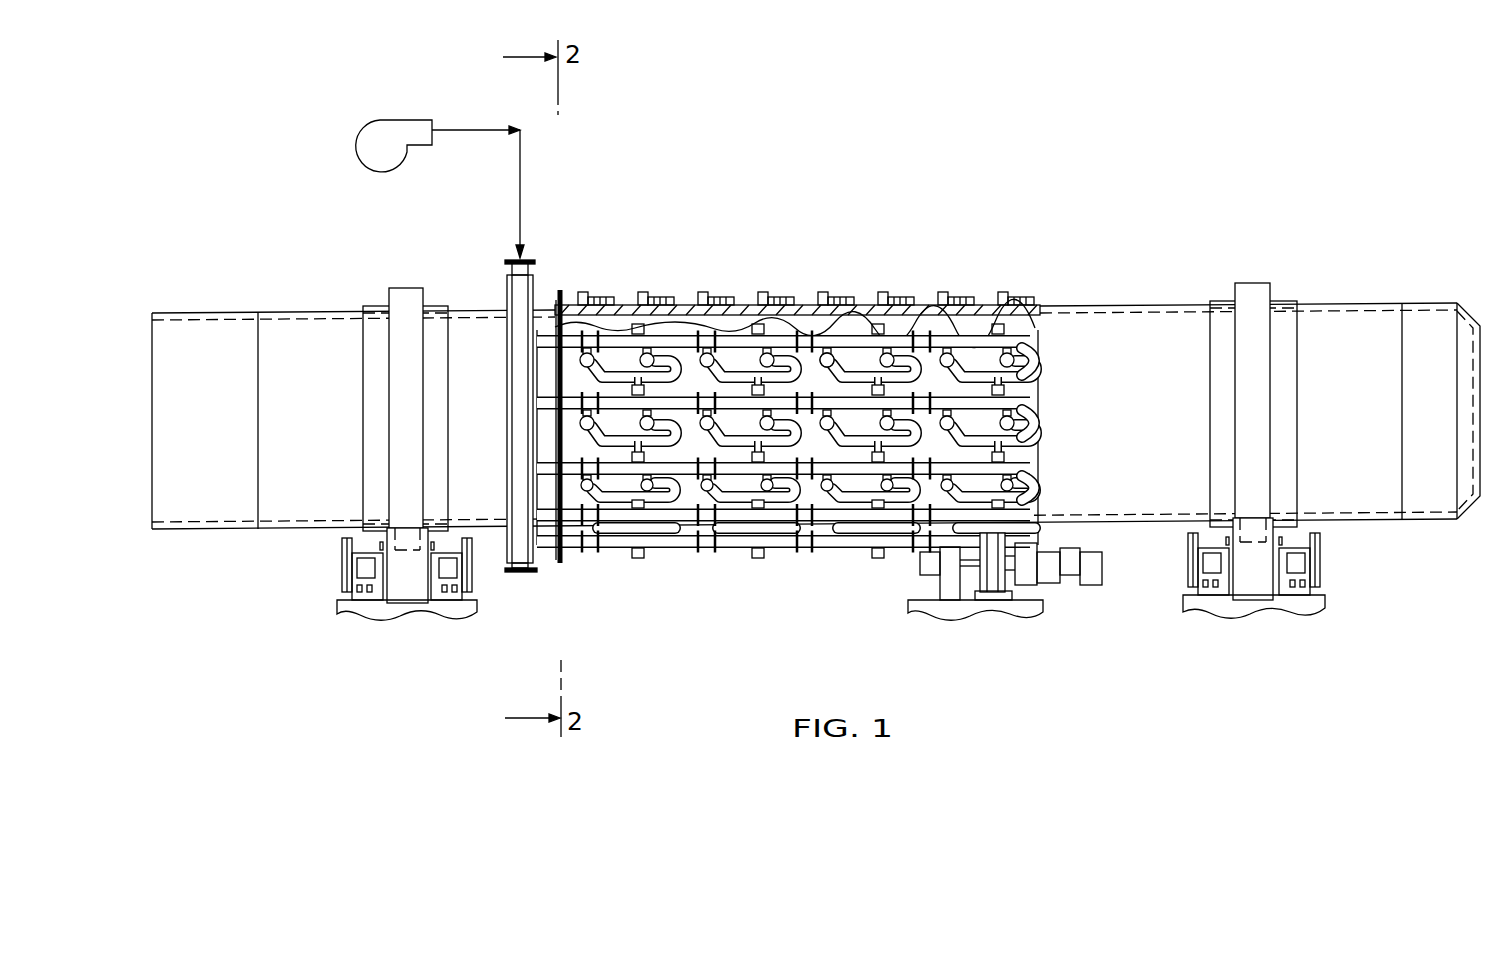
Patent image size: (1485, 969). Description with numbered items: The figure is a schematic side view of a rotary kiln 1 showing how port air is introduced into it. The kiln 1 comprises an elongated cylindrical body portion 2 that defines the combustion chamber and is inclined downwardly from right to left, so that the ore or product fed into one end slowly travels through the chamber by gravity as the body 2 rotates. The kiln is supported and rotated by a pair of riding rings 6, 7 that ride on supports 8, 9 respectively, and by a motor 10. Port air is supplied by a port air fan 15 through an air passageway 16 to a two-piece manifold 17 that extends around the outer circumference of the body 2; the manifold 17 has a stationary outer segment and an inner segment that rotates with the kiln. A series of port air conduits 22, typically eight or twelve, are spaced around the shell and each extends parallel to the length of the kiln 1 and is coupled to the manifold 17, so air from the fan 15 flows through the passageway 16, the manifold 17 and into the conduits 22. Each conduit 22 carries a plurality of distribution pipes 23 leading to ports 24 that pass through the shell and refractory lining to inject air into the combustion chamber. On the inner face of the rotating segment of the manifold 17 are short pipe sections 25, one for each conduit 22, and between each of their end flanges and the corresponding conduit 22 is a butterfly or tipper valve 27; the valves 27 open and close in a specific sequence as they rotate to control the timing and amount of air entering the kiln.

The rotary kiln 1 is at (1113, 143).
The cylindrical body portion 2 is at (1122, 302).
The riding ring 6 is at (407, 288).
The riding ring 7 is at (1255, 283).
The support 8 is at (412, 628).
The support 9 is at (1248, 618).
The motor 10 is at (920, 563).
The port air fan 15 is at (407, 118).
The air passageway 16 is at (522, 183).
The two-piece manifold 17 is at (505, 288).
The port air conduit 22 is at (835, 391).
The distribution pipe 23 is at (1043, 427).
The port 24 is at (826, 352).
The short pipe section 25 is at (548, 455).
The tipper valve 27 is at (562, 330).